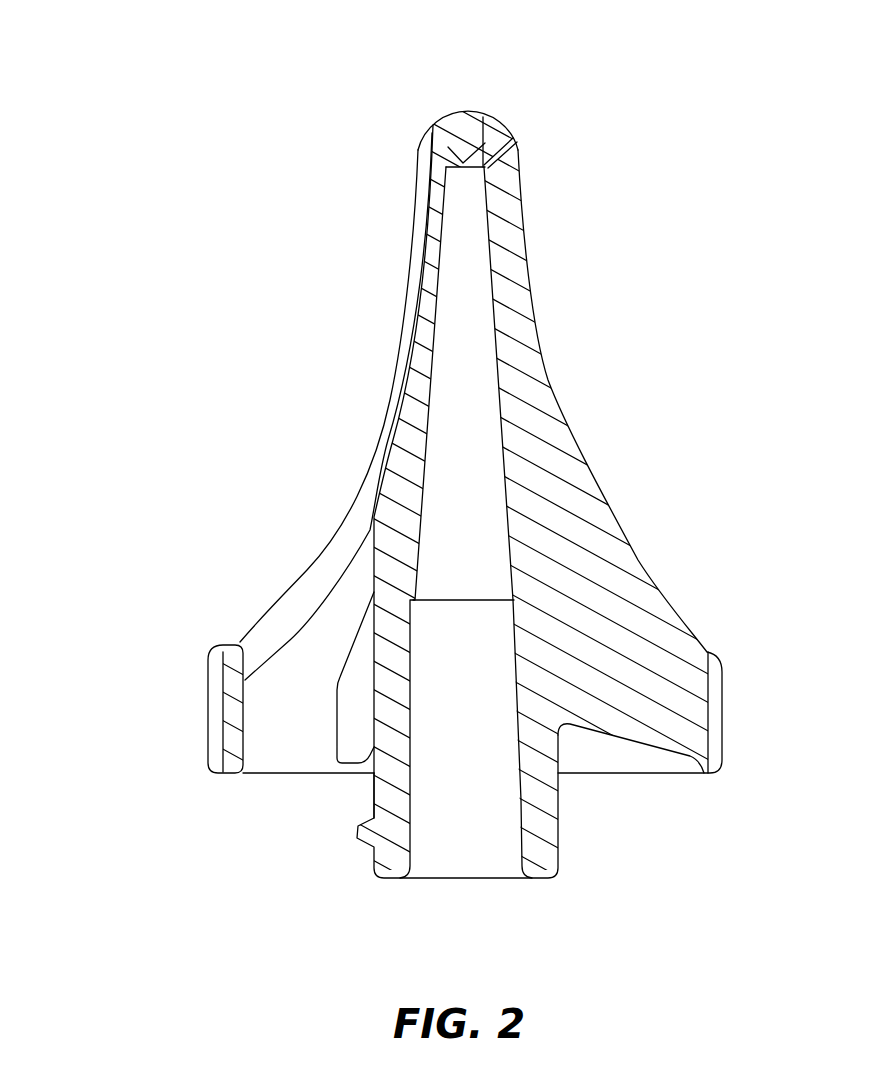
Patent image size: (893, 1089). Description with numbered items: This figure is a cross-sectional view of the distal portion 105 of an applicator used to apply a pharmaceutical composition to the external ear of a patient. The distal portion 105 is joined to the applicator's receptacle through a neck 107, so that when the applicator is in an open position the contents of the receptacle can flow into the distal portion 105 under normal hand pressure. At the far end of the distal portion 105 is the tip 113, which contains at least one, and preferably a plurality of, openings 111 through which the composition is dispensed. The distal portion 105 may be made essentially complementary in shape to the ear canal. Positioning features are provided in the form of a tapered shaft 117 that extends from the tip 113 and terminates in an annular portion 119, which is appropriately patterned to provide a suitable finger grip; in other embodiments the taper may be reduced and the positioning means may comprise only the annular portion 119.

The distal portion 105 is at (328, 176).
The neck 107 is at (285, 848).
The openings 111 is at (492, 133).
The tip 113 is at (437, 115).
The tapered shaft 117 is at (386, 378).
The annular portion 119 is at (208, 723).